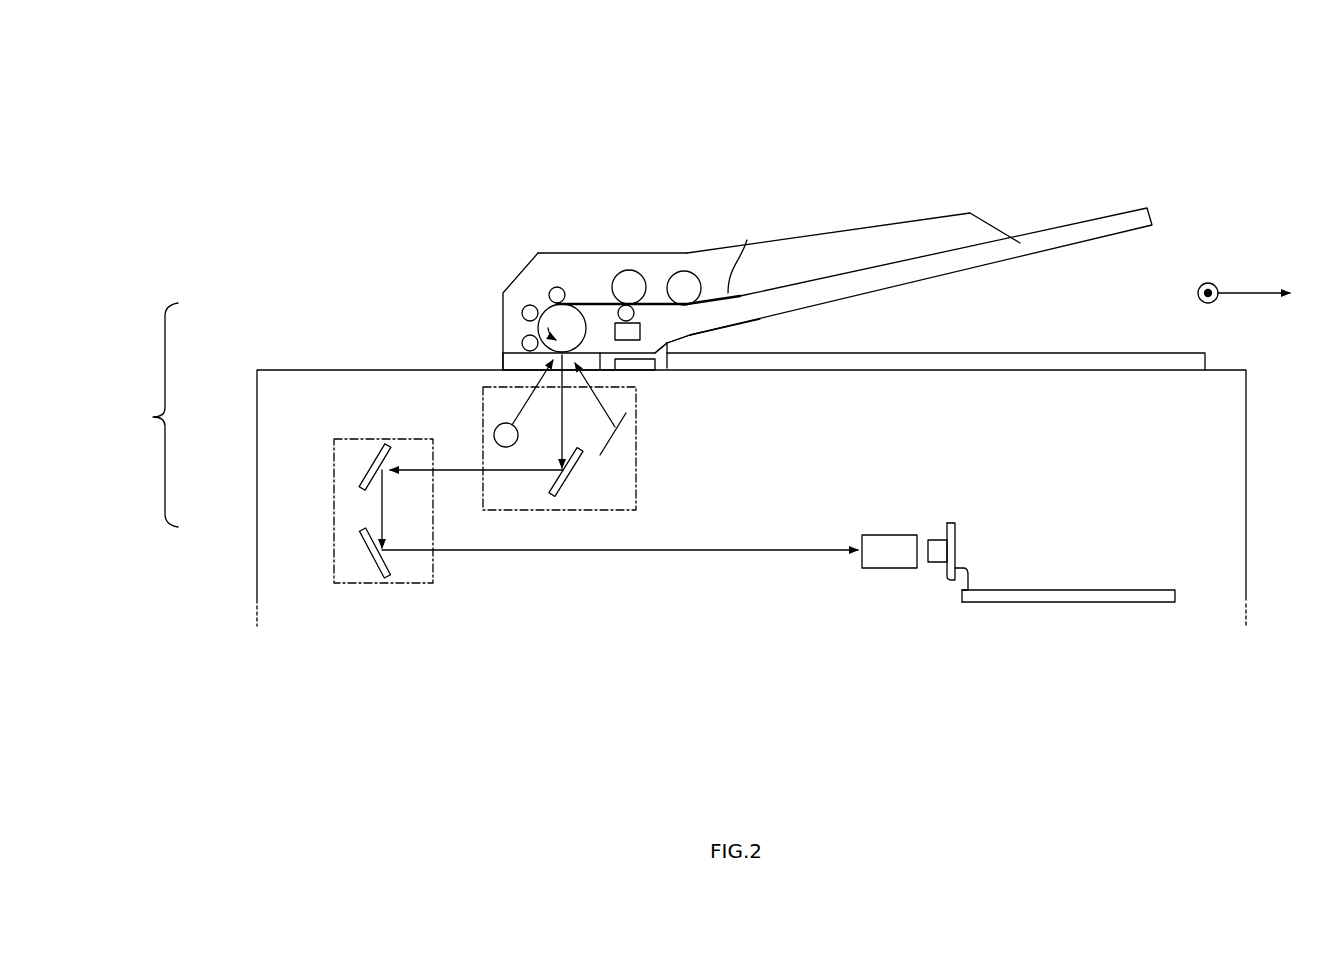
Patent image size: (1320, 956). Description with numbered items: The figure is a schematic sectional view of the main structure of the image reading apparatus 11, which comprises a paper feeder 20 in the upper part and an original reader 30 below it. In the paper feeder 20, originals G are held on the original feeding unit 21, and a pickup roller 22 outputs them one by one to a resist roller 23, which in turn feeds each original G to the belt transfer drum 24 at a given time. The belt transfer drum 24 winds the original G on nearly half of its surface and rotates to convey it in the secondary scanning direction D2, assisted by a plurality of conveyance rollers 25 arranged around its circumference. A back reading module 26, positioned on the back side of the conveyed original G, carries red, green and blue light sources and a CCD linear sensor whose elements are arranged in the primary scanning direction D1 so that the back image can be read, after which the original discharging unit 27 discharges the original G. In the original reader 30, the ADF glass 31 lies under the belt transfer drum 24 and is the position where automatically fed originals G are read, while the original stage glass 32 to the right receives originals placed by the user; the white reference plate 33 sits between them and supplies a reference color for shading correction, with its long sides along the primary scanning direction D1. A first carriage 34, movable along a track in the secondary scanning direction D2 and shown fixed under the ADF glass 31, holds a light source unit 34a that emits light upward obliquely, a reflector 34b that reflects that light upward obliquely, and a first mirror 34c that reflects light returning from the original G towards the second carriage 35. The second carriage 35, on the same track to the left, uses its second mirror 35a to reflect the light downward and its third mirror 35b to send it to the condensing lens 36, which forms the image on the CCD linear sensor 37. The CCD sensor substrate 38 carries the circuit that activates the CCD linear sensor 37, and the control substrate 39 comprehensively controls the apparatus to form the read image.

The image reading apparatus 11 is at (148, 415).
The paper feeder 20 is at (421, 269).
The original feeding unit 21 is at (1078, 222).
The pickup roller 22 is at (687, 277).
The resist roller 23 is at (635, 277).
The belt transfer drum 24 is at (582, 312).
The conveyance roller 25 is at (522, 312).
The back reading module 26 is at (657, 302).
The original discharging unit 27 is at (712, 342).
The original reader 30 is at (248, 500).
The ADF glass 31 is at (502, 363).
The original stage glass 32 is at (1036, 352).
The white reference plate 33 is at (648, 373).
The first carriage 34 is at (637, 500).
The light source unit 34a is at (497, 429).
The reflector 34b is at (611, 438).
The first mirror 34c is at (570, 494).
The second carriage 35 is at (368, 437).
The second mirror 35a is at (366, 462).
The third mirror 35b is at (366, 552).
The condensing lens 36 is at (879, 540).
The CCD linear sensor 37 is at (935, 541).
The CCD sensor substrate 38 is at (940, 572).
The control substrate 39 is at (1060, 589).
The original G is at (748, 240).
The primary scanning direction D1 is at (1207, 282).
The secondary scanning direction D2 is at (1263, 290).